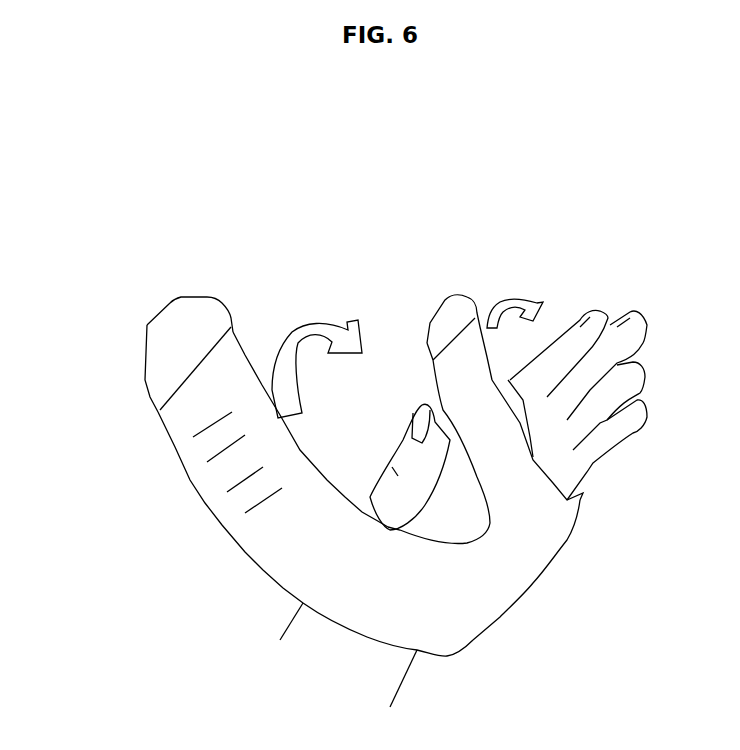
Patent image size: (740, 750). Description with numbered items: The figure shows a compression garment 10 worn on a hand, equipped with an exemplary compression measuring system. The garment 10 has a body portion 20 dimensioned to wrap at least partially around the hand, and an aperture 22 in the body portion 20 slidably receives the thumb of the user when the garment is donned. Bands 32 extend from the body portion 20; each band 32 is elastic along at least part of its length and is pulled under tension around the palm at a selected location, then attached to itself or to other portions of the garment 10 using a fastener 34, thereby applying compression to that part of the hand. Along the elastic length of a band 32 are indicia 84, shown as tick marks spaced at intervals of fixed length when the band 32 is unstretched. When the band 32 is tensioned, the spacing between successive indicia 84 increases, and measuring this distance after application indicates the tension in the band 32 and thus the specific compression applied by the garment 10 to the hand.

The compression garment 10 is at (174, 205).
The body portion 20 is at (443, 523).
The aperture 22 is at (373, 505).
The band 32 is at (233, 523).
The fastener 34 is at (208, 318).
The indicia 84 is at (220, 448).